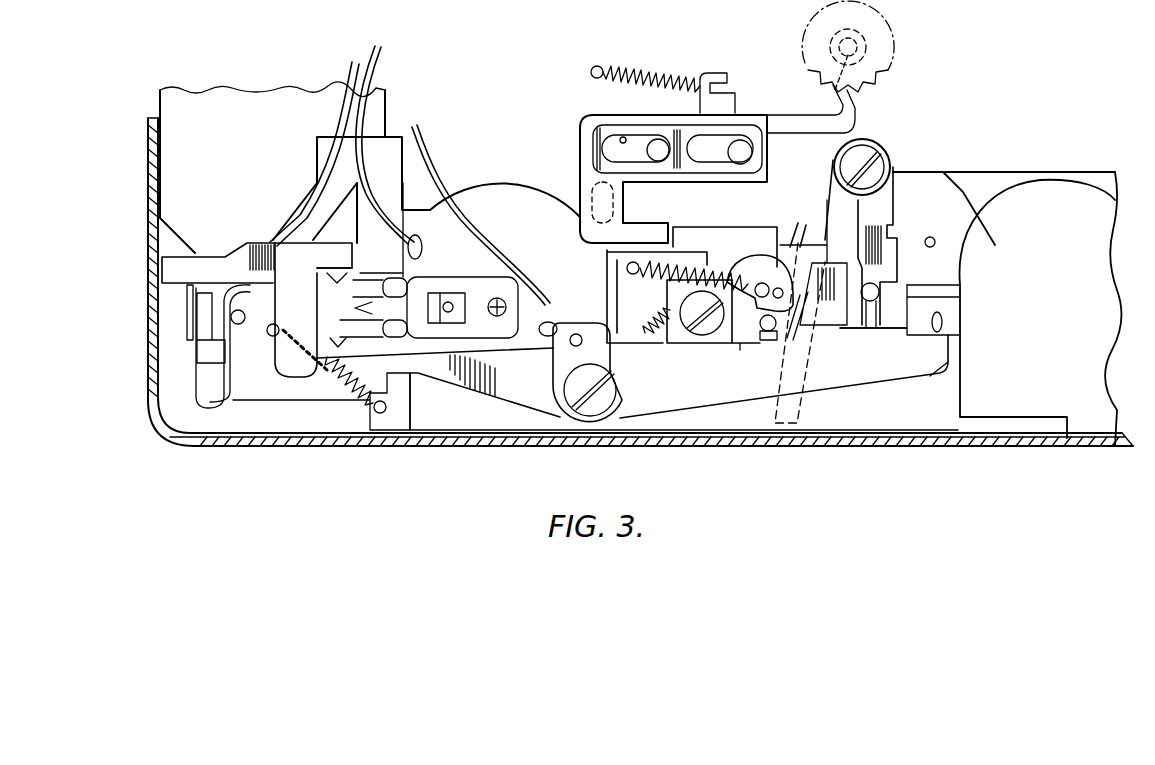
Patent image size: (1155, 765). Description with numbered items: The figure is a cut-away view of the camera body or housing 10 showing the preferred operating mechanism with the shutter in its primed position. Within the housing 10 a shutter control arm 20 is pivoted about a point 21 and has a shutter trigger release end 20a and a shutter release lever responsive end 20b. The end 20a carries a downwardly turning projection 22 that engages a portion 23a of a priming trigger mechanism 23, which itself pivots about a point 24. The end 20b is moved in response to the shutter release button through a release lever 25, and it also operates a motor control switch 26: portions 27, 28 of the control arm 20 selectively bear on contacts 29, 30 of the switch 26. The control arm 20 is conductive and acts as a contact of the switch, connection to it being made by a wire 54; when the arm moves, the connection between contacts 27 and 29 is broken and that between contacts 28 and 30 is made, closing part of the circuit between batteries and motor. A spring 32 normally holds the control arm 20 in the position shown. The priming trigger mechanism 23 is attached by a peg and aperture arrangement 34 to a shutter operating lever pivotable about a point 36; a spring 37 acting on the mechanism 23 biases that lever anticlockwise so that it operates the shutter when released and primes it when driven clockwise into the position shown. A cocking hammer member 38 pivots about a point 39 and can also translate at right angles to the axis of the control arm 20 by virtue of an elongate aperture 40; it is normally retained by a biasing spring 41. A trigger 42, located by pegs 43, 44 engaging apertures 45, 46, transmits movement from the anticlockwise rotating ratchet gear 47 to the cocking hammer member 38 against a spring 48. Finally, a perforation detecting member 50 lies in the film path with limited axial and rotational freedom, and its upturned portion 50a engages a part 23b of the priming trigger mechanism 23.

The body or housing 10 is at (367, 443).
The shutter control arm 20 is at (668, 397).
The shutter trigger release end 20a is at (922, 360).
The shutter release lever responsive end 20b is at (248, 255).
The pivot point 21 is at (597, 403).
The downwardly turning projection 22 is at (947, 333).
The priming trigger mechanism 23 is at (850, 213).
The portion of priming trigger mechanism 23a is at (855, 335).
The part of priming trigger mechanism 23b is at (872, 307).
The pivot point 24 is at (877, 163).
The release lever 25 is at (185, 288).
The motor control switch 26 is at (473, 280).
The portion of control arm 27 is at (338, 270).
The portion of control arm 28 is at (327, 365).
The contact 29 is at (340, 277).
The contact 30 is at (353, 337).
The spring 32 is at (370, 400).
The peg and aperture arrangement 34 is at (747, 307).
The pivot point 36 is at (783, 332).
The spring 37 is at (660, 280).
The cocking hammer member 38 is at (737, 227).
The pivot point 39 is at (708, 323).
The elongate aperture 40 is at (733, 343).
The biasing spring 41 is at (640, 330).
The trigger 42 is at (580, 143).
The peg 43 is at (660, 152).
The peg 44 is at (743, 152).
The aperture 45 is at (623, 140).
The aperture 46 is at (718, 147).
The ratchet gear 47 is at (872, 60).
The spring 48 is at (660, 70).
The perforation detecting member 50 is at (803, 407).
The upturned portion 50a is at (845, 330).
The wire 54 is at (545, 300).